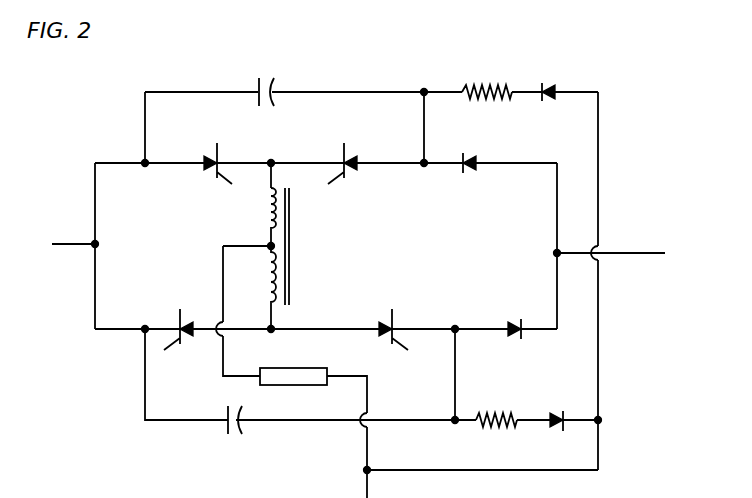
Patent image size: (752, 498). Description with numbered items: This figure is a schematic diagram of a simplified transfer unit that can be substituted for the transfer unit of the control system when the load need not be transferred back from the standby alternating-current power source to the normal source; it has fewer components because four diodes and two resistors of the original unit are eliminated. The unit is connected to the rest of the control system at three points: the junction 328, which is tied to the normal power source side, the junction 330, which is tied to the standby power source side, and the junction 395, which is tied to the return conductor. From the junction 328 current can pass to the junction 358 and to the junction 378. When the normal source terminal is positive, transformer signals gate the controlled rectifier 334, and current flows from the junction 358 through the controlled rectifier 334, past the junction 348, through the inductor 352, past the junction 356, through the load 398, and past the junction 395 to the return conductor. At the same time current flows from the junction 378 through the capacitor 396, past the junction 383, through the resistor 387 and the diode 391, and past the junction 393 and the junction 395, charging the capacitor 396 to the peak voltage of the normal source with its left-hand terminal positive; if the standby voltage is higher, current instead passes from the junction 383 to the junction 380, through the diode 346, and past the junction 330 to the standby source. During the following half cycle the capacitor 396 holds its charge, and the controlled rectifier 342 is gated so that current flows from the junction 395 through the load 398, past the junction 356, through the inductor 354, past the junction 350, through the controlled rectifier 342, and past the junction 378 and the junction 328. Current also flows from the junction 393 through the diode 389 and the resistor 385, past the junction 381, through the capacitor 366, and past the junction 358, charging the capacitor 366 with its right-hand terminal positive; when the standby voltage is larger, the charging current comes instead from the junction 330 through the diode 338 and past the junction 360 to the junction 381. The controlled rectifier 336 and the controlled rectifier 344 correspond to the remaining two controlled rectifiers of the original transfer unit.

The junction 328 is at (97, 245).
The junction 330 is at (555, 253).
The controlled rectifier 334 is at (218, 153).
The controlled rectifier 336 is at (349, 157).
The diode 338 is at (468, 160).
The controlled rectifier 342 is at (180, 312).
The controlled rectifier 344 is at (395, 327).
The diode 346 is at (524, 340).
The junction 348 is at (273, 162).
The junction 350 is at (276, 332).
The inductor 352 is at (268, 218).
The inductor 354 is at (268, 286).
The junction 356 is at (271, 247).
The junction 358 is at (145, 165).
The junction 360 is at (424, 168).
The capacitor 366 is at (275, 93).
The junction 378 is at (143, 331).
The junction 380 is at (458, 328).
The junction 381 is at (424, 90).
The junction 383 is at (455, 424).
The resistor 385 is at (490, 88).
The resistor 387 is at (493, 414).
The diode 389 is at (547, 90).
The diode 391 is at (563, 414).
The junction 393 is at (600, 423).
The junction 395 is at (365, 471).
The capacitor 396 is at (225, 428).
The load 398 is at (292, 386).